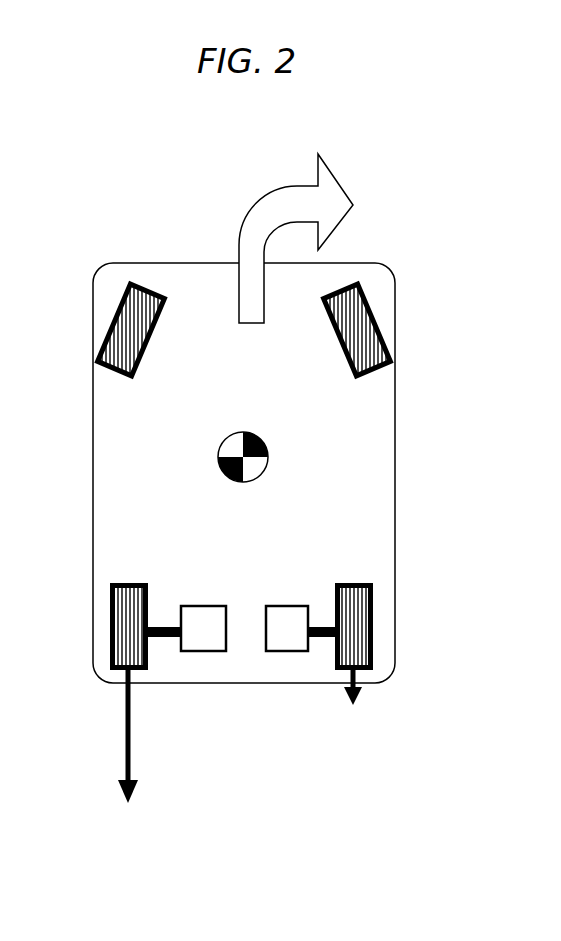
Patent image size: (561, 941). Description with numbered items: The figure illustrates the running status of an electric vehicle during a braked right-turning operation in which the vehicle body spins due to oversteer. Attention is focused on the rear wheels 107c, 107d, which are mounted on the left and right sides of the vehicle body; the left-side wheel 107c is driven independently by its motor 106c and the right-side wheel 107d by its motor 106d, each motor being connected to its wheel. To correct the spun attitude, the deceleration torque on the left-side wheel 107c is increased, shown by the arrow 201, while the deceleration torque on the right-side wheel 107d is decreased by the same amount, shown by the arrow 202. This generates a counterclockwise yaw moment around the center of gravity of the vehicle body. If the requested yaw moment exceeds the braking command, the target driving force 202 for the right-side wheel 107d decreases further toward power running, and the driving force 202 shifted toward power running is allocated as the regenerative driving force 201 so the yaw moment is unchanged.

The wheel 107c is at (127, 583).
The wheel 107d is at (357, 583).
The motor 106c is at (210, 652).
The motor 106d is at (287, 652).
The arrow 201 is at (130, 723).
The arrow 202 is at (360, 698).